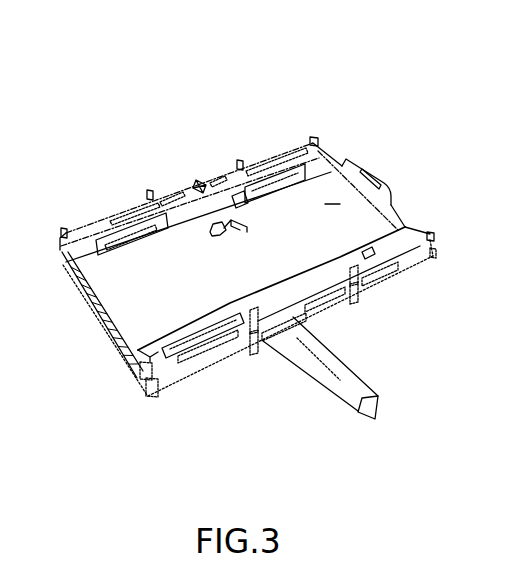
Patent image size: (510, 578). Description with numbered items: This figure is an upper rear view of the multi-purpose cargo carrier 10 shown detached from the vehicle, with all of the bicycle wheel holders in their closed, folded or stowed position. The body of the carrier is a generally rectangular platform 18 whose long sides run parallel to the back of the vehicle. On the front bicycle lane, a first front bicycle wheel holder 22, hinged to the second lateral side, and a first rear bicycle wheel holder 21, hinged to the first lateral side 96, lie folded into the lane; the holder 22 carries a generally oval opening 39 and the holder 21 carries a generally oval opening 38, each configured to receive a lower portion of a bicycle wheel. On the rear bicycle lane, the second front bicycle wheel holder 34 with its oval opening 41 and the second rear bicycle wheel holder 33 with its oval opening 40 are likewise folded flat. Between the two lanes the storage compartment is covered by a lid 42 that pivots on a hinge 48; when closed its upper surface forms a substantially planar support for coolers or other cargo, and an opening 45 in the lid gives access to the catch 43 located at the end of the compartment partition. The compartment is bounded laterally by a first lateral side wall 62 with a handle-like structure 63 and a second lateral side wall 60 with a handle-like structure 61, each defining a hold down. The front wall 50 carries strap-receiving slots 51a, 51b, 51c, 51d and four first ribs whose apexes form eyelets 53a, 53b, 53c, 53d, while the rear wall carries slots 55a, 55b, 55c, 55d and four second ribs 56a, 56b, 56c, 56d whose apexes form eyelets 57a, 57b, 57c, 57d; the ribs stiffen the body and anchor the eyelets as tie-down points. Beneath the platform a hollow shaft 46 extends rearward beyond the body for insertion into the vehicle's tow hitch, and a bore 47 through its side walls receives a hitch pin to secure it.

The multi-purpose cargo carrier 10 is at (85, 78).
The platform 18 is at (406, 273).
The first rear bicycle wheel holder 21 is at (241, 200).
The first front bicycle wheel holder 22 is at (187, 220).
The second rear bicycle wheel holder 33 is at (148, 355).
The second front bicycle wheel holder 34 is at (308, 282).
The generally oval opening 38 is at (301, 177).
The generally oval opening 39 is at (147, 238).
The generally oval opening 40 is at (197, 335).
The generally oval opening 41 is at (368, 253).
The lid 42 is at (332, 197).
The catch 43 is at (233, 222).
The catch 45 is at (220, 228).
The shaft 46 is at (365, 392).
The bore 47 is at (333, 378).
The hinge 48 is at (258, 293).
The front wall 50 is at (199, 180).
The slot 51a is at (253, 168).
The slot 51b is at (217, 181).
The slot 51c is at (170, 199).
The slot 51d is at (127, 218).
The eyelet 53a is at (313, 137).
The eyelet 53b is at (240, 161).
The eyelet 53c is at (148, 193).
The eyelet 53d is at (62, 231).
The slot 55a is at (371, 272).
The slot 55b is at (330, 293).
The slot 55c is at (275, 320).
The slot 55d is at (226, 345).
The second rib 56a is at (434, 255).
The second rib 56b is at (358, 300).
The second rib 56c is at (255, 351).
The second rib 56d is at (158, 395).
The eyelet 57a is at (432, 234).
The eyelet 57b is at (354, 267).
The eyelet 57c is at (254, 311).
The eyelet 57d is at (147, 374).
The second lateral side wall 60 is at (391, 207).
The handle-like structure 61 is at (374, 180).
The first lateral side wall 62 is at (100, 325).
The handle-like structure 63 is at (97, 303).
The first lateral side 96 is at (85, 308).